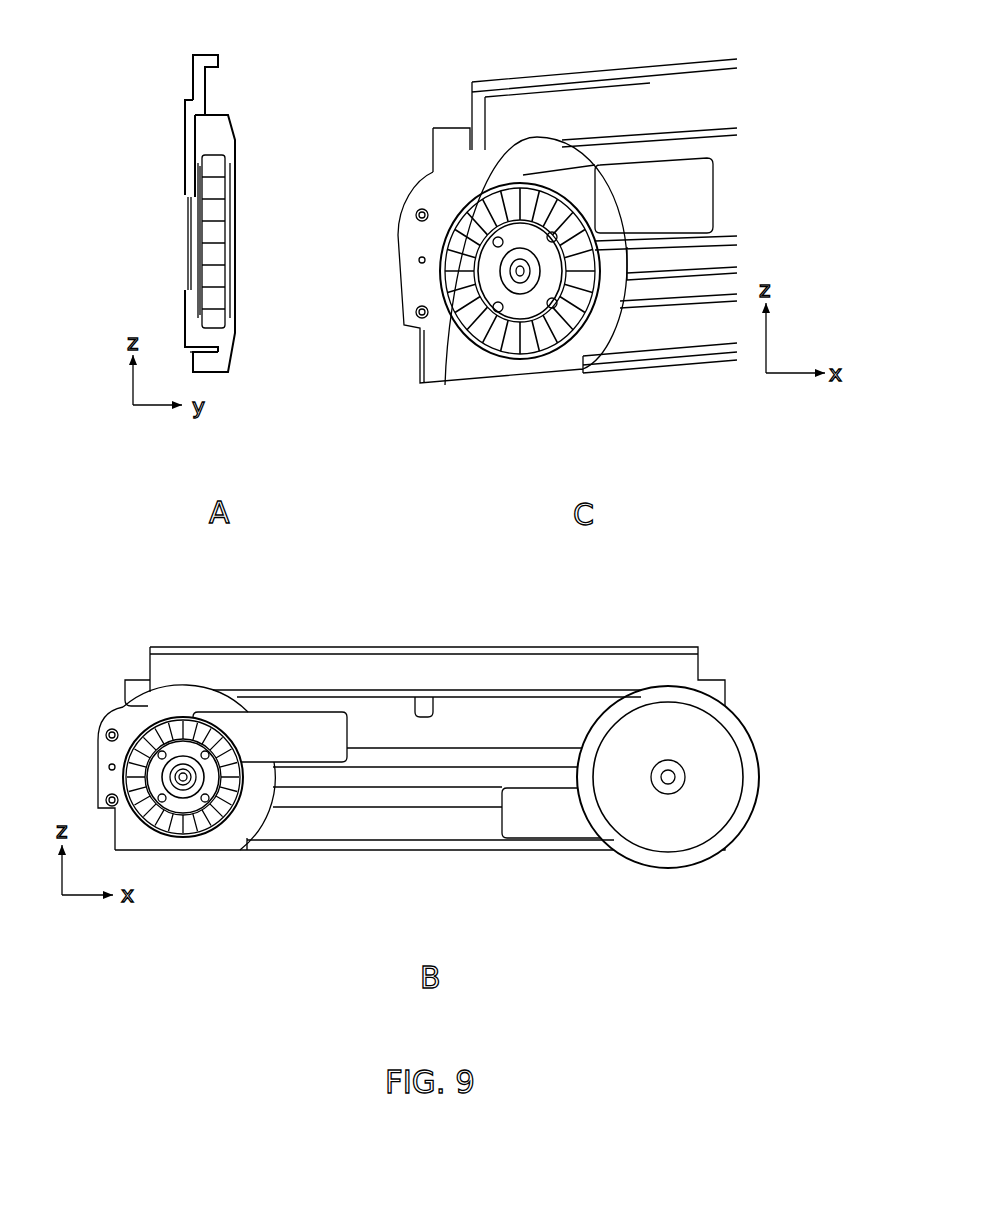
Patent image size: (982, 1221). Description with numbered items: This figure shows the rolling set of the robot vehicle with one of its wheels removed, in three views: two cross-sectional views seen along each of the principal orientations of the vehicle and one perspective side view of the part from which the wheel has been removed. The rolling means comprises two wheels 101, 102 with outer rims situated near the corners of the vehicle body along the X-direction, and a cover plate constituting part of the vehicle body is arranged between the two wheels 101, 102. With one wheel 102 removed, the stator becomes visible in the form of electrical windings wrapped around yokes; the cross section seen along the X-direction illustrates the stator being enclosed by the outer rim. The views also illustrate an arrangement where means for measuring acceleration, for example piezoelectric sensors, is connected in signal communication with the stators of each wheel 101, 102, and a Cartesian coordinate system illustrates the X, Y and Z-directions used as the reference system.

The wheel 102 is at (230, 352).
The wheel 101 is at (712, 742).